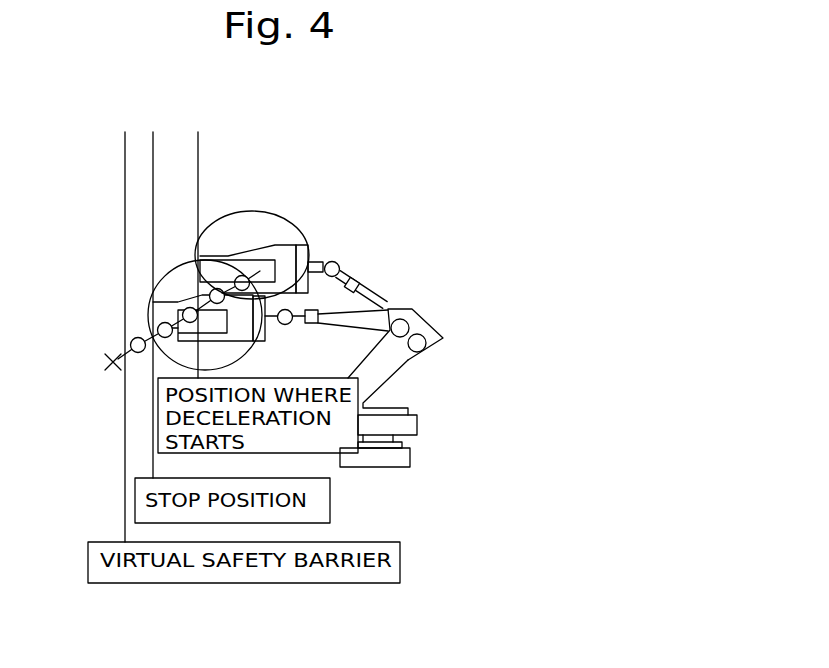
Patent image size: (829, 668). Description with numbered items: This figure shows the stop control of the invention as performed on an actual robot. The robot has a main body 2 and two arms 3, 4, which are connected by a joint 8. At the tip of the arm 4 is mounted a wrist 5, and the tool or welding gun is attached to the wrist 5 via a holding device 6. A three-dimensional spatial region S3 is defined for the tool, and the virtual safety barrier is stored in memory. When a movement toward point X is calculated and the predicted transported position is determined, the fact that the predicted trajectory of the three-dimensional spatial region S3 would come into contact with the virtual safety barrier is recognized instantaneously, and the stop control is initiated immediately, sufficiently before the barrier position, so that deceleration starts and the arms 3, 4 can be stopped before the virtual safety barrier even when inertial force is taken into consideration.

The three-dimensional spatial region S3 is at (238, 225).
The holding device 6 is at (275, 248).
The wrist 5 is at (316, 262).
The arm 4 is at (378, 288).
The joint 8 is at (432, 331).
The arm 3 is at (394, 362).
The main body 2 is at (403, 455).